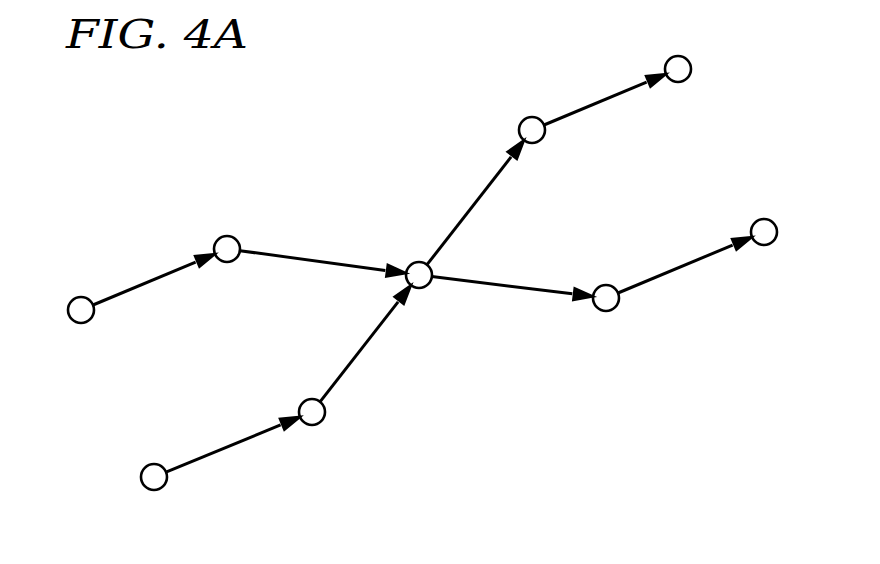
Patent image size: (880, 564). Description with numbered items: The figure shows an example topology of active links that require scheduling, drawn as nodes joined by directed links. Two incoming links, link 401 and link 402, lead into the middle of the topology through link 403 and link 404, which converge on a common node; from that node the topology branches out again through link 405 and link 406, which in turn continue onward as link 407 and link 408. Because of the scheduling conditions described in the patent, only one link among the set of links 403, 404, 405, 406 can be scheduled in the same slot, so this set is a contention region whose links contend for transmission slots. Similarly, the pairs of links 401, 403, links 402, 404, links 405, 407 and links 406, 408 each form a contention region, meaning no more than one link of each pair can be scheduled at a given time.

The active link 401 is at (143, 282).
The active link 402 is at (225, 447).
The active link 403 is at (327, 262).
The active link 404 is at (353, 359).
The active link 405 is at (479, 198).
The active link 406 is at (511, 286).
The active link 407 is at (602, 100).
The active link 408 is at (675, 269).